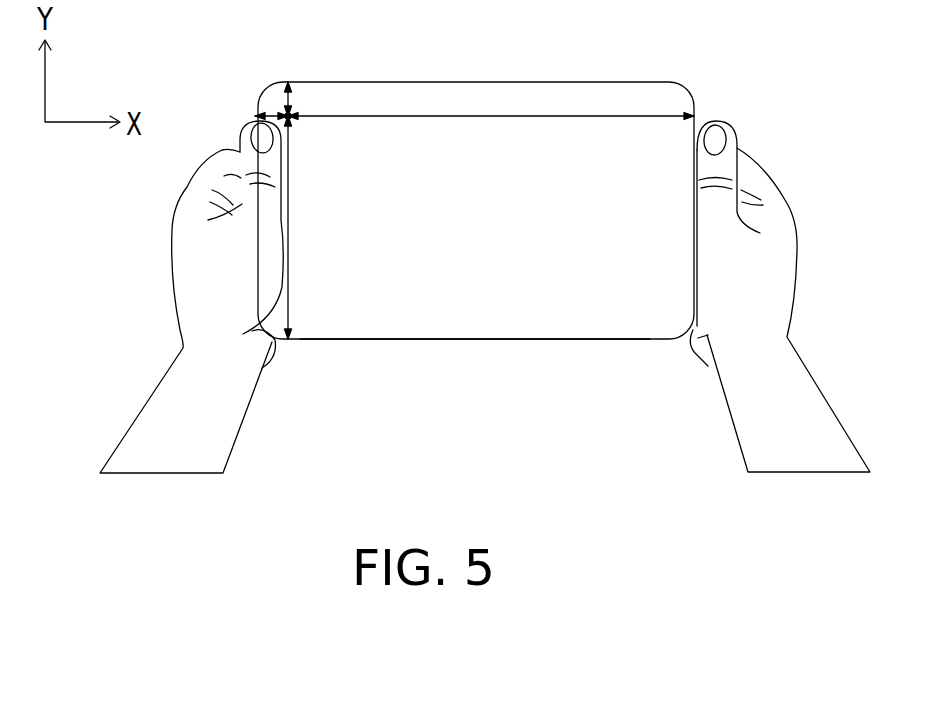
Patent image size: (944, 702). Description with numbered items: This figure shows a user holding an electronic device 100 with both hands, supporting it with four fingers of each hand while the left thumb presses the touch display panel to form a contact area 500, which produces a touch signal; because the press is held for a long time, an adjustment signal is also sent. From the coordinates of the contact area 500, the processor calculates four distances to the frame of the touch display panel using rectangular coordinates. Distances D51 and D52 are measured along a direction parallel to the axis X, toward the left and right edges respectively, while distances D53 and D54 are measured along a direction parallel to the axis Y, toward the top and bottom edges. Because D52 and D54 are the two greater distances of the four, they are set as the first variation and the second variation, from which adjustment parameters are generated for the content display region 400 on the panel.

The electronic device 100 is at (558, 82).
The content display region 400 is at (553, 323).
The contact area 500 is at (289, 113).
The distance D51 is at (258, 97).
The distance D52 is at (491, 135).
The distance D53 is at (278, 83).
The distance D54 is at (314, 227).